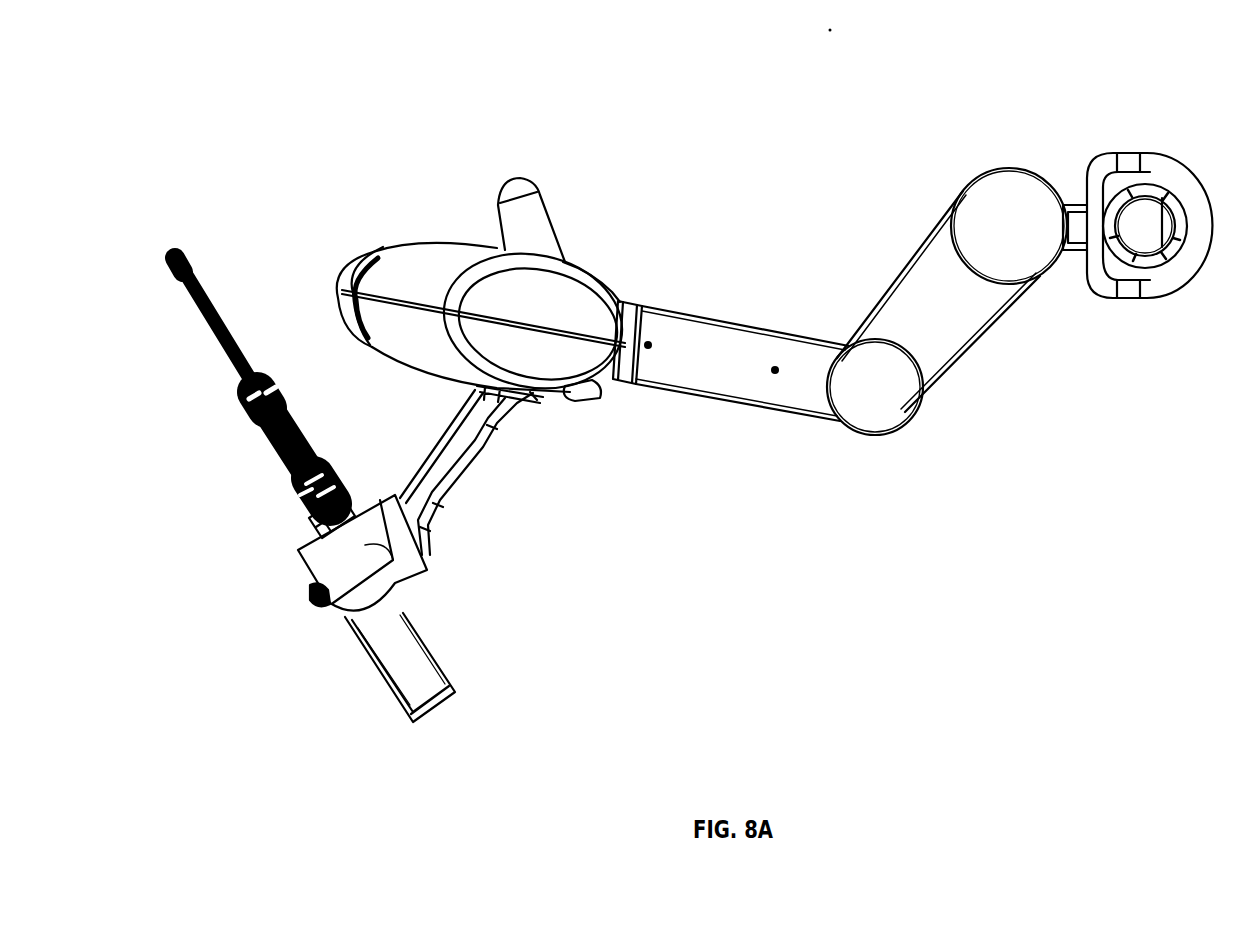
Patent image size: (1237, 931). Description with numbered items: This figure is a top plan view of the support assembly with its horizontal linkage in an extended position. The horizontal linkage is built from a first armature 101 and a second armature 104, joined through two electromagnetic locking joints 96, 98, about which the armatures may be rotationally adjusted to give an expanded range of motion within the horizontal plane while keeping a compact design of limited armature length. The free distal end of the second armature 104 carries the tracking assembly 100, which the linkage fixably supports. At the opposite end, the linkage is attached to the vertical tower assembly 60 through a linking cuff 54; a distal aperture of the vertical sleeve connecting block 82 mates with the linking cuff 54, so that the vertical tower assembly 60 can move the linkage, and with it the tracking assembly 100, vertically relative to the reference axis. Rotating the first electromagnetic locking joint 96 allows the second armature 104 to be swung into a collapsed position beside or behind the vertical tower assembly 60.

The tracking assembly 100 is at (440, 213).
The second armature 104 is at (740, 340).
The first armature 101 is at (923, 290).
The electromagnetic locking joint 98 is at (874, 412).
The first electromagnetic locking joint 96 is at (1013, 243).
The vertical sleeve connecting block 82 is at (1080, 202).
The vertical tower assembly 60 is at (1150, 183).
The linking cuff 54 is at (1155, 292).